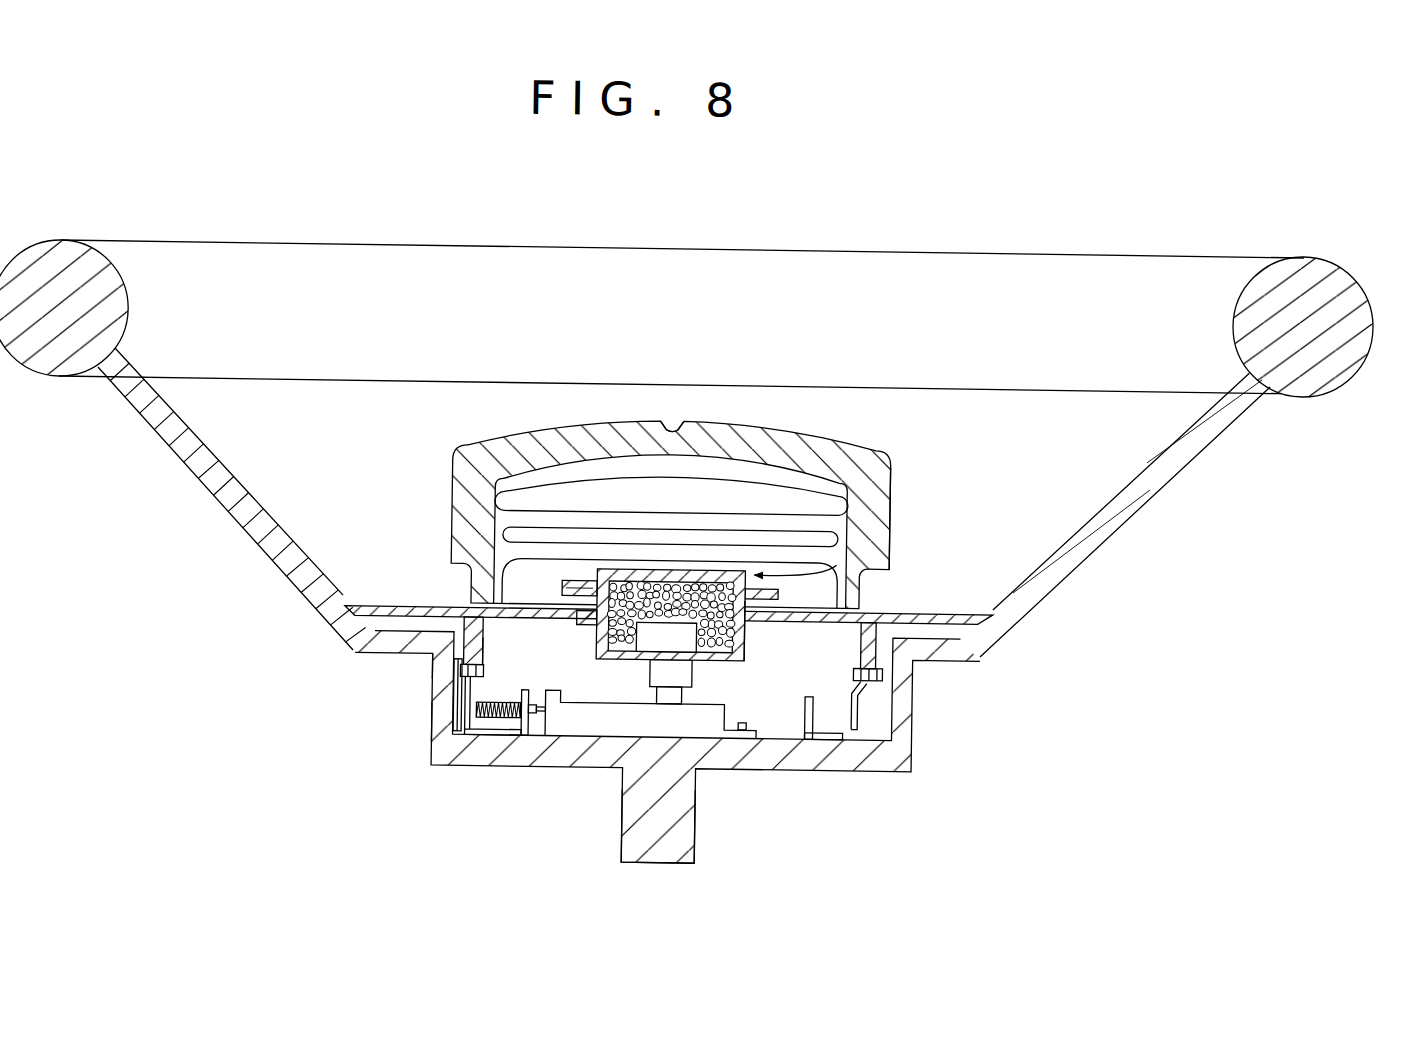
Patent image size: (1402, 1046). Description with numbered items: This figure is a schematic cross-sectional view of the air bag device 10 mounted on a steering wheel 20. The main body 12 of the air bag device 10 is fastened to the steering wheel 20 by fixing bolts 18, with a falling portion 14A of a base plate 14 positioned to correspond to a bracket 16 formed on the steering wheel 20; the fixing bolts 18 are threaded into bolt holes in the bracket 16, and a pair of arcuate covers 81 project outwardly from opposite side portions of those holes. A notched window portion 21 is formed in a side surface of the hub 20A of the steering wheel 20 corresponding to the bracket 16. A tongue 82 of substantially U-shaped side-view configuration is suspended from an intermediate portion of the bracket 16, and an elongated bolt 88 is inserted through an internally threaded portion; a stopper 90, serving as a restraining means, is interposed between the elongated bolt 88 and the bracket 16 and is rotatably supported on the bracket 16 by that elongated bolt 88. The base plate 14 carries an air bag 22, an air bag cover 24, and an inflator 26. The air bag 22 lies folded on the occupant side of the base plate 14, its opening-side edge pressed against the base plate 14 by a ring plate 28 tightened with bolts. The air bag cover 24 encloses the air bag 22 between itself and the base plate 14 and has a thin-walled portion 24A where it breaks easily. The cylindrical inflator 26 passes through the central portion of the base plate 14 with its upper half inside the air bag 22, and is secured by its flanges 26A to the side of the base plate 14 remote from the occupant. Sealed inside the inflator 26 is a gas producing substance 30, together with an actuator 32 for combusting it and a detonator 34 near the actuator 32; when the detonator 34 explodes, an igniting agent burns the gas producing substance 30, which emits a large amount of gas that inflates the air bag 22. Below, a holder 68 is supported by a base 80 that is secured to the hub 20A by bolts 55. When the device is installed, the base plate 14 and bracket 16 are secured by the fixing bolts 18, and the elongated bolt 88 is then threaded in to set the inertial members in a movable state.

The air bag device 10 is at (674, 510).
The main body 12 is at (674, 476).
The base plate 14 is at (644, 613).
The falling portion 14A is at (490, 635).
The bracket 16 is at (392, 609).
The fixing bolts 18 is at (487, 673).
The steering wheel 20 is at (798, 244).
The hub 20A is at (662, 749).
The notched window portion 21 is at (434, 726).
The air bag 22 is at (552, 484).
The air bag cover 24 is at (887, 470).
The thin-walled portion 24A is at (671, 425).
The inflator 26 is at (857, 524).
The flanges 26A is at (750, 627).
The ring plate 28 is at (778, 593).
The gas producing substance 30 is at (698, 577).
The actuator 32 is at (696, 648).
The detonator 34 is at (696, 570).
The bolts 55 is at (745, 722).
The holder 68 is at (681, 697).
The base 80 is at (710, 732).
The arcuate covers 81 is at (433, 672).
The tongue 82 is at (510, 738).
The elongated bolt 88 is at (455, 715).
The stopper 90 is at (455, 683).